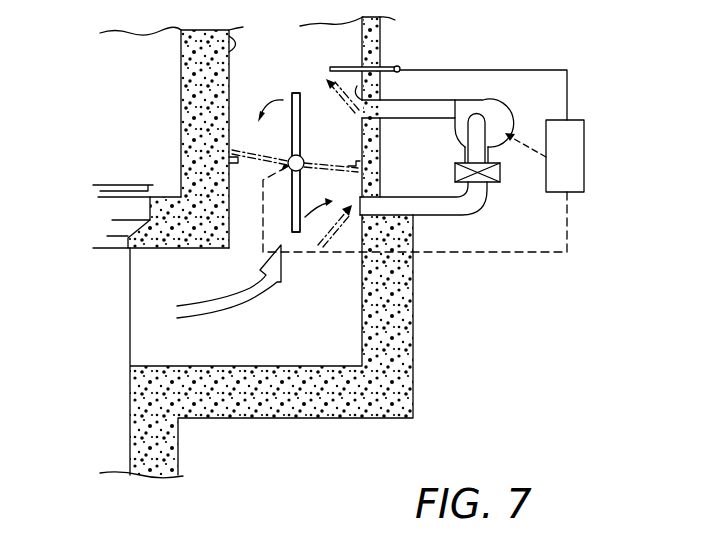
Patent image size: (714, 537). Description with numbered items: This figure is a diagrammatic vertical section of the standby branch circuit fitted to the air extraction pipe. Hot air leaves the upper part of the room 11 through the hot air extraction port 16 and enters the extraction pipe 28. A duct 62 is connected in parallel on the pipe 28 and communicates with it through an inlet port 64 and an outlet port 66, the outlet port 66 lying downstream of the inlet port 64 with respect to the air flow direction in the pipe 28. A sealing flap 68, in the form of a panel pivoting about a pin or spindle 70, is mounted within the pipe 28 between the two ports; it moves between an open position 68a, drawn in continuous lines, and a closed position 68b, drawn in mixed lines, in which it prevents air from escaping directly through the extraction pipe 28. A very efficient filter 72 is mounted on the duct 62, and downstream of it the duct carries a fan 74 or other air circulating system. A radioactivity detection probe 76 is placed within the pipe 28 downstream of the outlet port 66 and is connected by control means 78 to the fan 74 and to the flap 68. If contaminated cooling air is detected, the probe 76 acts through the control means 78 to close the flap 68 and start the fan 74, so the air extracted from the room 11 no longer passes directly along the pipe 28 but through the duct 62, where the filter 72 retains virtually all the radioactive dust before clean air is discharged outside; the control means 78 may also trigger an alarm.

The room 11 is at (66, 421).
The hot air extraction port 16 is at (160, 250).
The extraction pipe 28 is at (182, 43).
The duct 62 is at (470, 198).
The inlet port 64 is at (357, 213).
The outlet port 66 is at (418, 70).
The sealing flap 68 is at (295, 142).
The open position 68a is at (296, 88).
The closed position 68b is at (236, 146).
The spindle 70 is at (303, 158).
The filter 72 is at (455, 172).
The fan 74 is at (480, 107).
The radioactivity detection probe 76 is at (342, 67).
The control means 78 is at (575, 133).